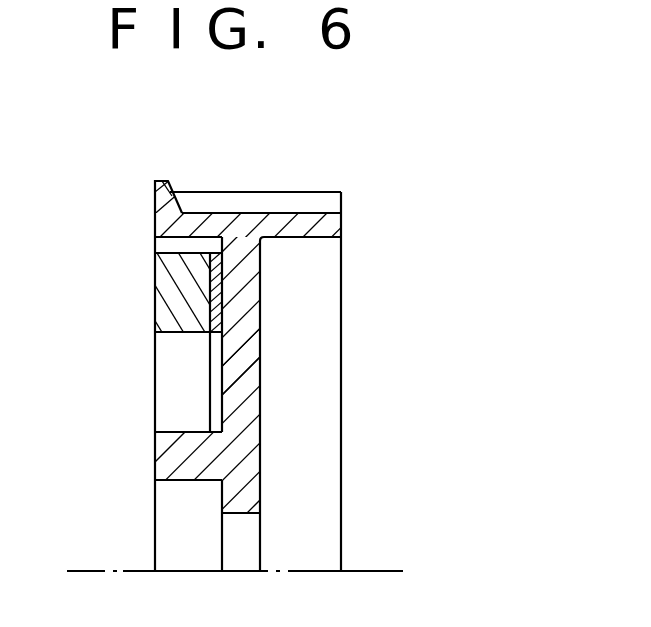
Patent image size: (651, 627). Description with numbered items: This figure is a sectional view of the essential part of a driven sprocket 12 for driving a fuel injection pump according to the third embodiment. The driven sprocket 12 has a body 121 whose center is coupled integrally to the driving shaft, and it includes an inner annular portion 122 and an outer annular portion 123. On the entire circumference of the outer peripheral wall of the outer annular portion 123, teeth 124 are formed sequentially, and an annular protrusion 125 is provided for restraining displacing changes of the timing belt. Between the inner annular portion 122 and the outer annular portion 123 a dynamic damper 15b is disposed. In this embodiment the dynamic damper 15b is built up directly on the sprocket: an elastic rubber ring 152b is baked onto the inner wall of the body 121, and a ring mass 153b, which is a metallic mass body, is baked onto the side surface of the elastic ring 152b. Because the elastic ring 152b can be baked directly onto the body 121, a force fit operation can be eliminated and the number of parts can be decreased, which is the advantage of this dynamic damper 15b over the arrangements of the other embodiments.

The driven sprocket 12 is at (380, 222).
The body 121 is at (248, 497).
The inner annular portion 122 is at (170, 453).
The outer annular portion 123 is at (213, 225).
The teeth 124 is at (270, 203).
The annular protrusion 125 is at (158, 180).
The dynamic damper 15b is at (134, 358).
The elastic rubber ring 152b is at (217, 287).
The ring mass 153b is at (168, 308).